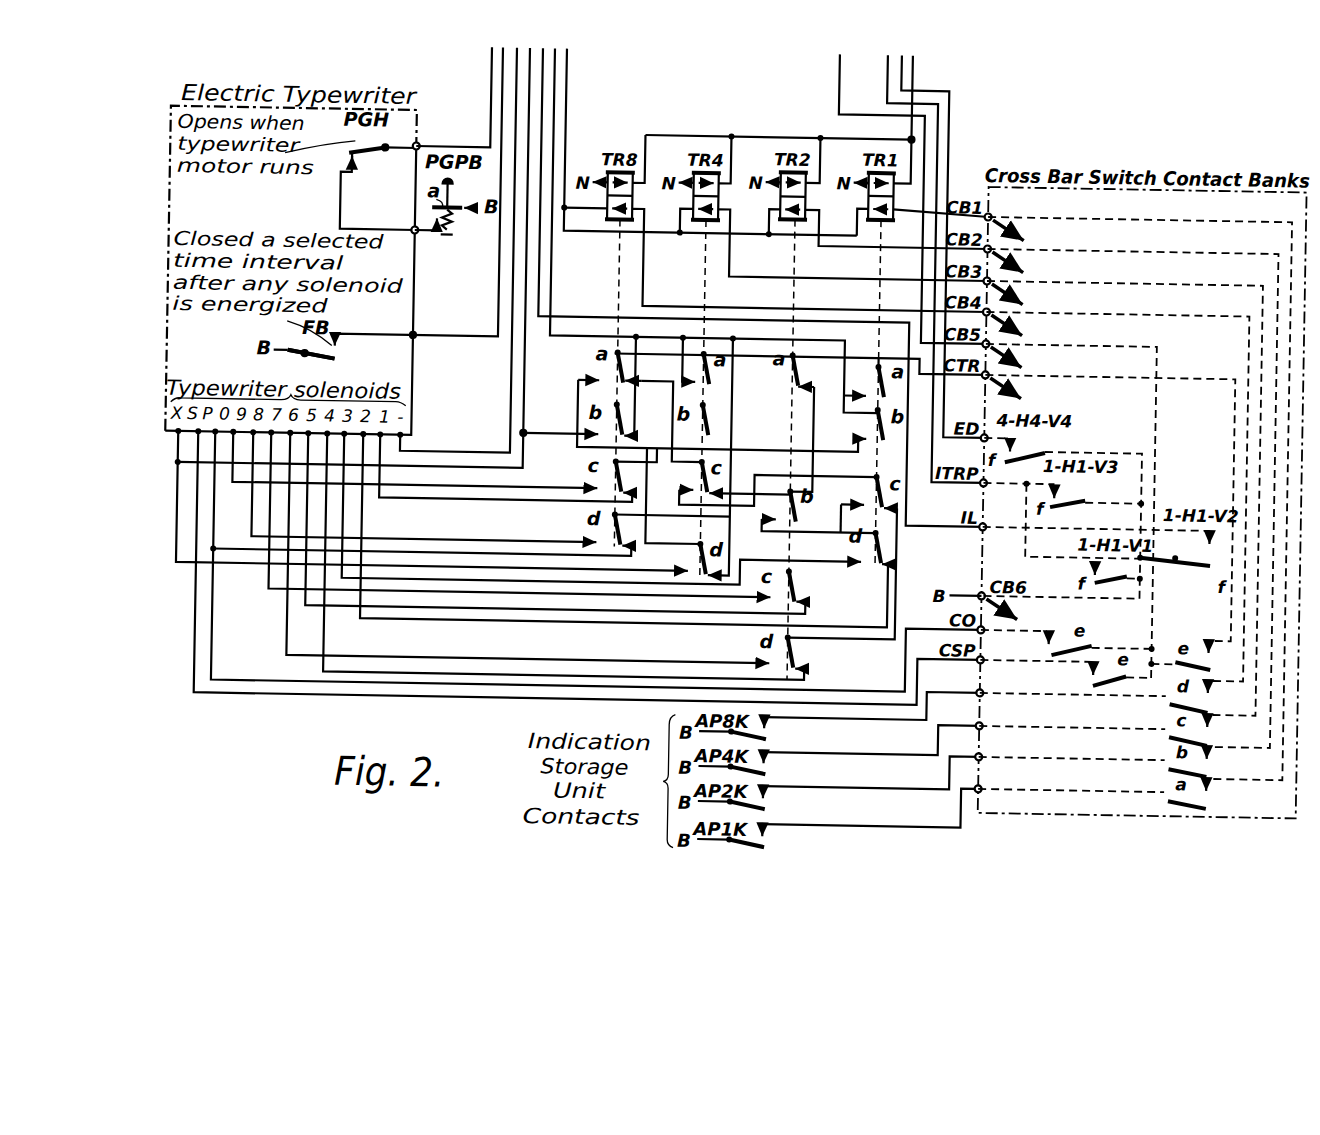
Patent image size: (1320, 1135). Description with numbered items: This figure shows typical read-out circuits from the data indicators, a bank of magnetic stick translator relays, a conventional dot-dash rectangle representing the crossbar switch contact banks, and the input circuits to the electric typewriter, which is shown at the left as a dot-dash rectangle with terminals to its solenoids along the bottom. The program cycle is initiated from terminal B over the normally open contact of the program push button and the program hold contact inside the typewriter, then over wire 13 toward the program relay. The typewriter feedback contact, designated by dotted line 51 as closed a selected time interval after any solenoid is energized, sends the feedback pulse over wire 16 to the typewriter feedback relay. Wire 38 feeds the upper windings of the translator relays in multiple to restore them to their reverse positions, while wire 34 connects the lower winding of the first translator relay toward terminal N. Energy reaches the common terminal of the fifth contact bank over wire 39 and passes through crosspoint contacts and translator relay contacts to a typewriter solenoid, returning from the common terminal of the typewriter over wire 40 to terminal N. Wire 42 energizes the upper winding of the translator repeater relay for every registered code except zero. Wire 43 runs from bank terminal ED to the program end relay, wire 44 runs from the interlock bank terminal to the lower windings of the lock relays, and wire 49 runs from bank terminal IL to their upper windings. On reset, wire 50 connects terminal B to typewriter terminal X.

The wire 13 is at (485, 62).
The wire 16 is at (496, 86).
The wire 40 is at (510, 111).
The wire 50 is at (523, 61).
The wire 49 is at (536, 85).
The wire 42 is at (548, 113).
The wire 34 is at (560, 140).
The wire 39 is at (833, 60).
The wire 43 is at (895, 60).
The wire 44 is at (895, 88).
The wire 38 is at (898, 60).
The dotted line 51 is at (338, 367).